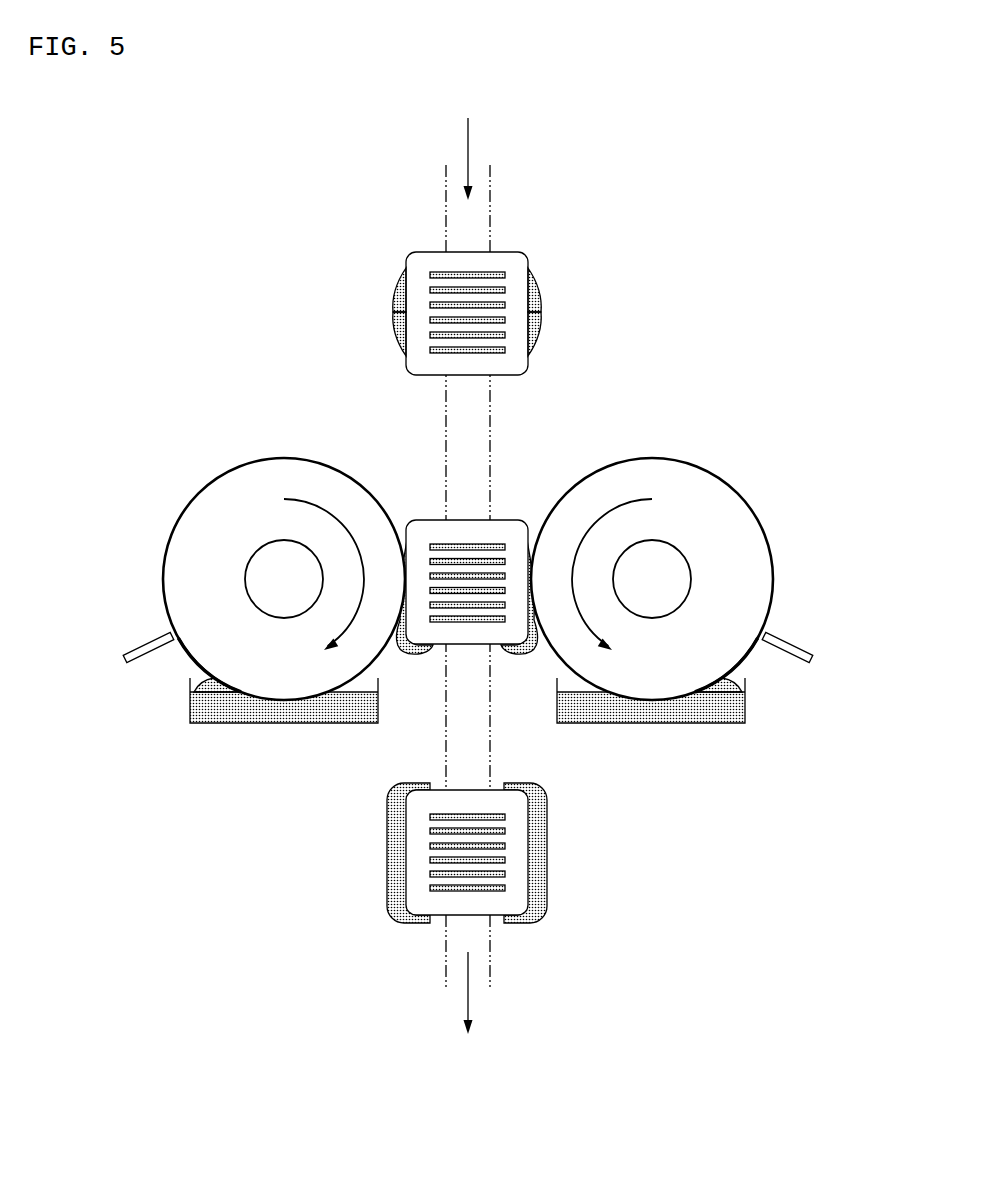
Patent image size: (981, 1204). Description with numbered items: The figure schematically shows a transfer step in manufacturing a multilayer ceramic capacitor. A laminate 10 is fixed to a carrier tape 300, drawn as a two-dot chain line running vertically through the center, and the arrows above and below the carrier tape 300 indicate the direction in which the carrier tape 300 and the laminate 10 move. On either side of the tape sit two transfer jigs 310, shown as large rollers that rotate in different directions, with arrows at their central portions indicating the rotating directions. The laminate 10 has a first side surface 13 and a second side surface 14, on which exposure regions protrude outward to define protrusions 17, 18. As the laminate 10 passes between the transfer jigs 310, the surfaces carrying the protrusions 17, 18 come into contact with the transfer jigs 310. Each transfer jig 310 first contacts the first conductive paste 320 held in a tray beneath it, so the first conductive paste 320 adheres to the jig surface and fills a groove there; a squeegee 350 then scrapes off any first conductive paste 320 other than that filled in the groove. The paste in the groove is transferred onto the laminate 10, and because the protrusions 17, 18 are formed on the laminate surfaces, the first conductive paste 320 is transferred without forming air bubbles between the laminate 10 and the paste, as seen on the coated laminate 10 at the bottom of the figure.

The laminate 10 is at (540, 226).
The first side surface 13 is at (405, 268).
The second side surface 14 is at (530, 268).
The protrusion 17 is at (397, 330).
The protrusion 18 is at (539, 330).
The carrier tape 300 is at (453, 215).
The transfer jig 310 is at (277, 672).
The first conductive paste 320 is at (213, 722).
The squeegee 350 is at (138, 650).